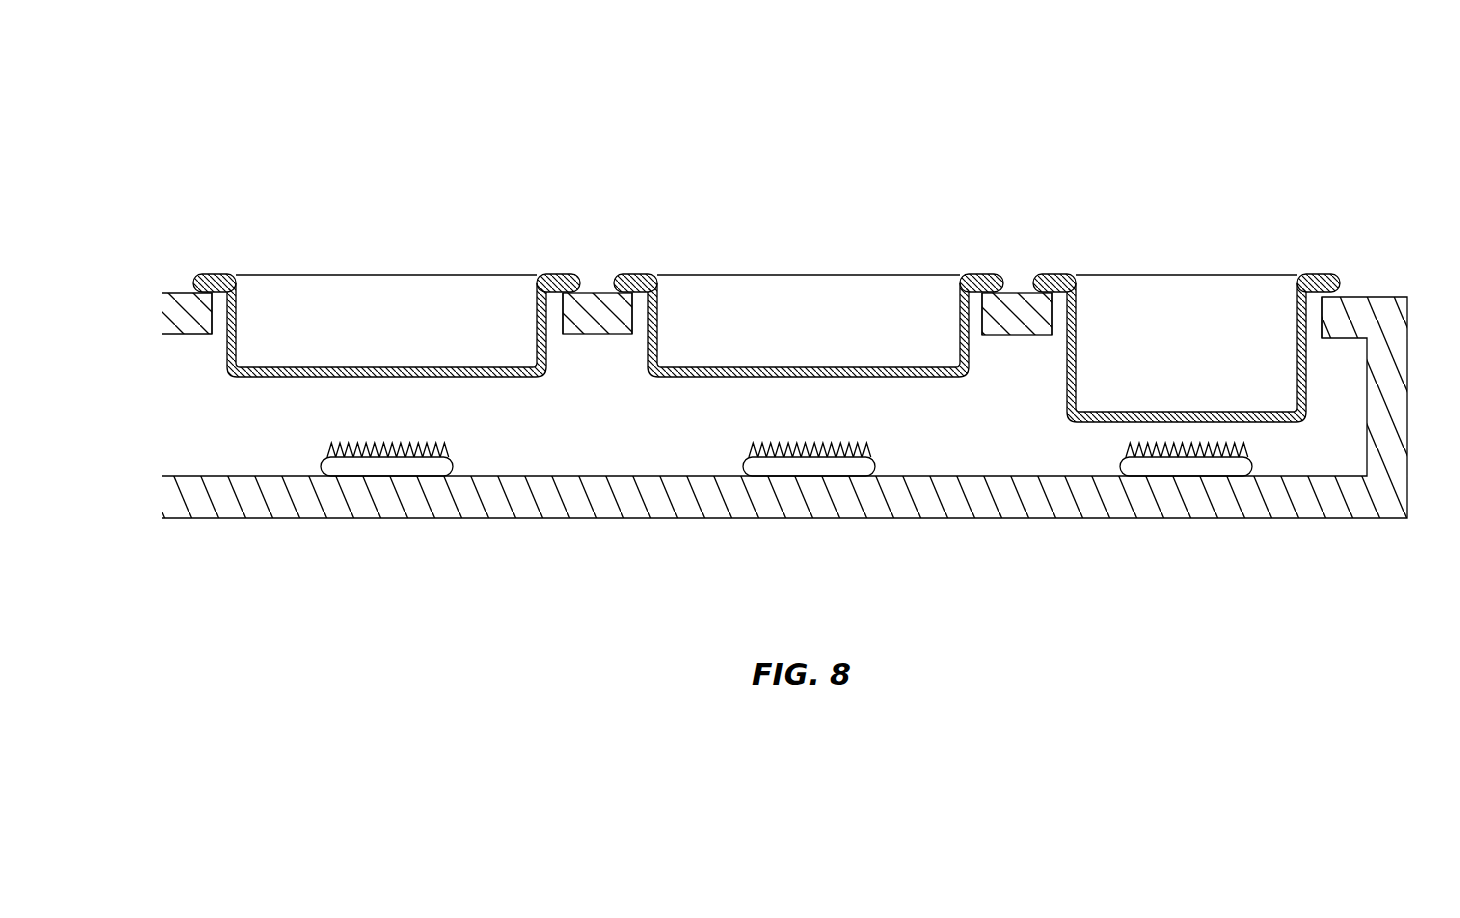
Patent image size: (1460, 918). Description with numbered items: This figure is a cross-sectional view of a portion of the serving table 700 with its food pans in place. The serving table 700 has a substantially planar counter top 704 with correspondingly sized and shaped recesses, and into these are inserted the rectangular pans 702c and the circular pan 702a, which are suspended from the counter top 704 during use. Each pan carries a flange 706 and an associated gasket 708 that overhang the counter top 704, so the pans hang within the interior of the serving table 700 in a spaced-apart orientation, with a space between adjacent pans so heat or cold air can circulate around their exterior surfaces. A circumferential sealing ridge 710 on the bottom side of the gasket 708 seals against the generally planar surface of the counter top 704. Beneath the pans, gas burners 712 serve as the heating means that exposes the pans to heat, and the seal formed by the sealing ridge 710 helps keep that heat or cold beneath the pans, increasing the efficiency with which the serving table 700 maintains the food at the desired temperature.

The serving table 700 is at (1150, 107).
The rectangular pan 702c is at (408, 337).
The circular pan 702a is at (1208, 359).
The counter top 704 is at (177, 334).
The flange 706 is at (218, 274).
The gasket 708 is at (195, 280).
The circumferential sealing ridge 710 is at (200, 293).
The gas burner 712 is at (453, 467).